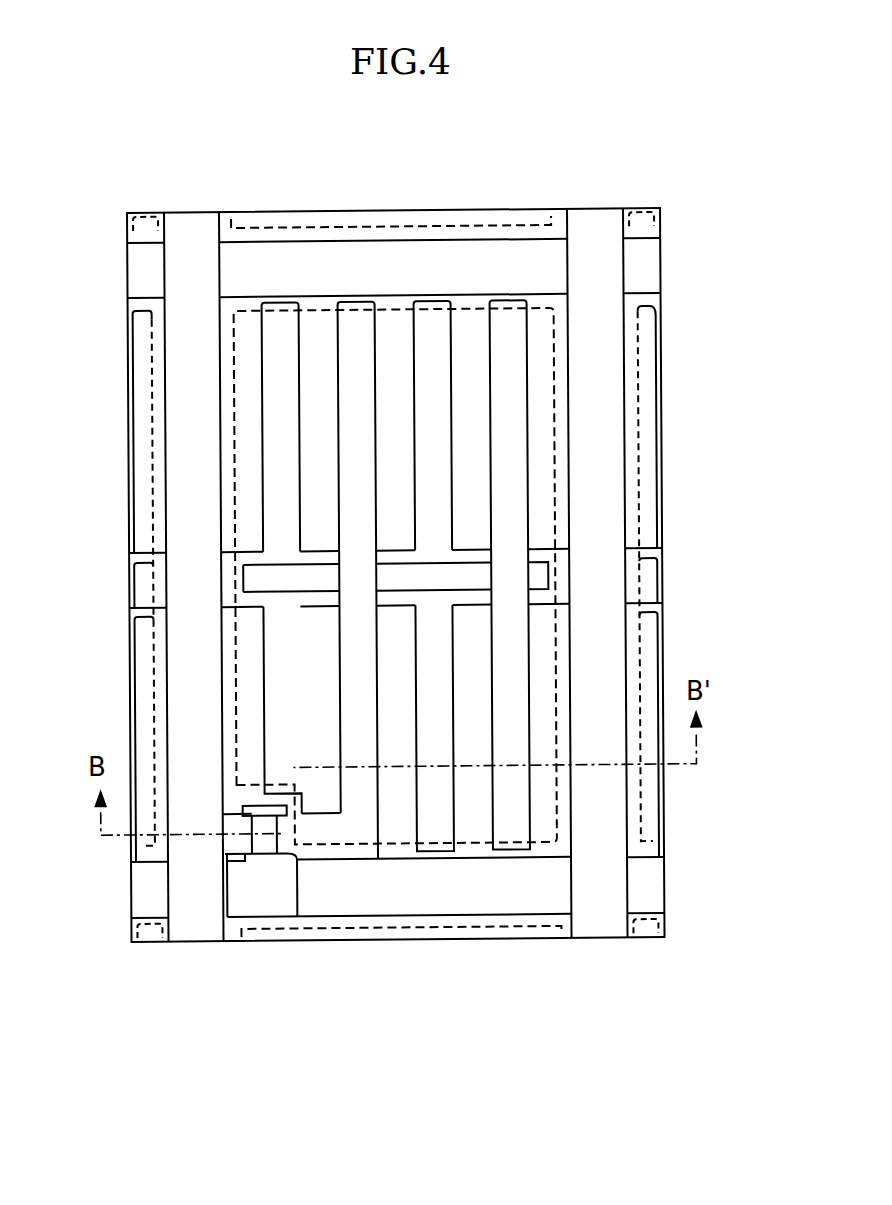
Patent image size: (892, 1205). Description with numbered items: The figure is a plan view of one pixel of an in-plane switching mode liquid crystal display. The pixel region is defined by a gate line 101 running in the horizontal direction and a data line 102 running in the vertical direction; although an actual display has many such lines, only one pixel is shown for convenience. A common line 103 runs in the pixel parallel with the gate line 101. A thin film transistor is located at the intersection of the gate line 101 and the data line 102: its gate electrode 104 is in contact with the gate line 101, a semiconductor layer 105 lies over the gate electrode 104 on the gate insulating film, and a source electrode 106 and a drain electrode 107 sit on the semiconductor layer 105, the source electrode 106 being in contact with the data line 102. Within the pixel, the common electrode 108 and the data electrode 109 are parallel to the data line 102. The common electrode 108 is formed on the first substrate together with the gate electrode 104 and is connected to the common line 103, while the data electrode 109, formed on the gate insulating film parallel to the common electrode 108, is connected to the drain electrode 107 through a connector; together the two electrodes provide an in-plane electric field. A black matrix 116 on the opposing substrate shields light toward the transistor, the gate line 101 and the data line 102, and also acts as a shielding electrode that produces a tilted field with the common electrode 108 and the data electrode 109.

The gate line 101 is at (664, 880).
The data line 102 is at (600, 920).
The common line 103 is at (656, 577).
The gate electrode 104 is at (257, 888).
The semiconductor layer 105 is at (237, 806).
The source electrode 106 is at (223, 846).
The drain electrode 107 is at (287, 846).
The common electrode 108 is at (437, 830).
The data electrode 109 is at (515, 830).
The black matrix 116 is at (652, 455).